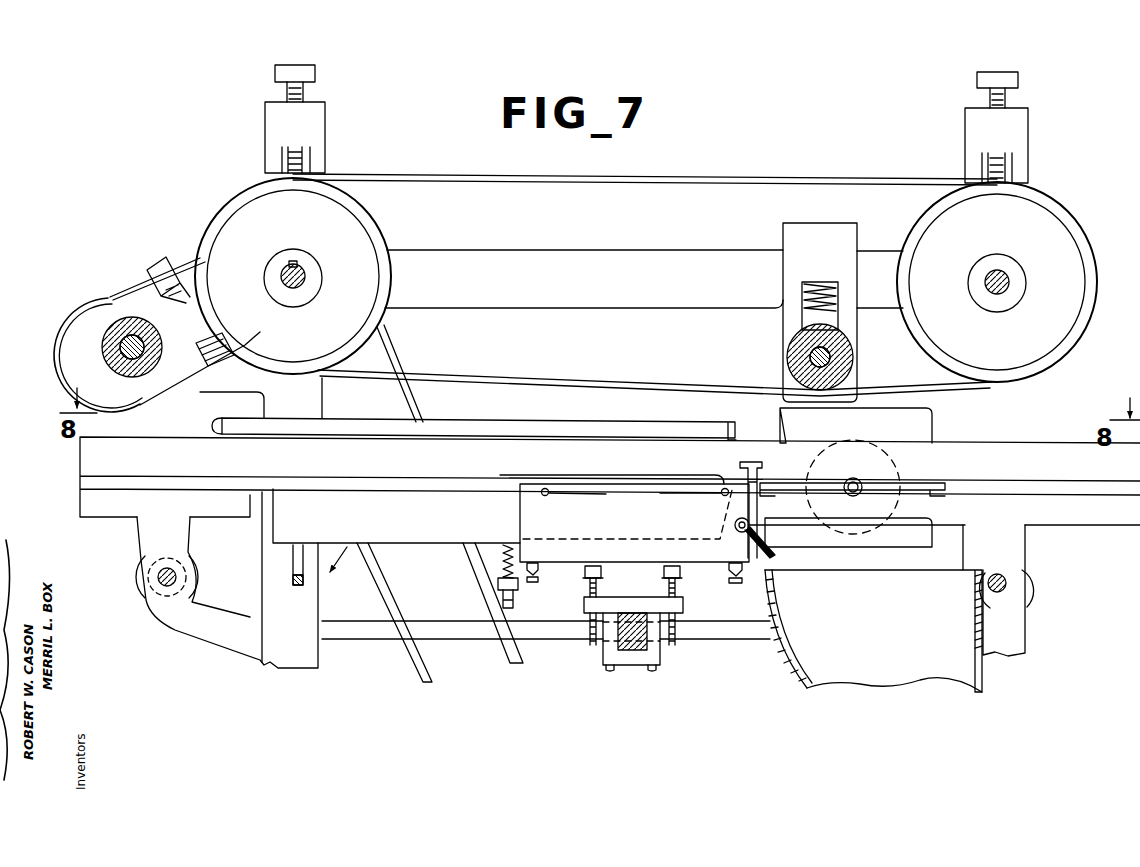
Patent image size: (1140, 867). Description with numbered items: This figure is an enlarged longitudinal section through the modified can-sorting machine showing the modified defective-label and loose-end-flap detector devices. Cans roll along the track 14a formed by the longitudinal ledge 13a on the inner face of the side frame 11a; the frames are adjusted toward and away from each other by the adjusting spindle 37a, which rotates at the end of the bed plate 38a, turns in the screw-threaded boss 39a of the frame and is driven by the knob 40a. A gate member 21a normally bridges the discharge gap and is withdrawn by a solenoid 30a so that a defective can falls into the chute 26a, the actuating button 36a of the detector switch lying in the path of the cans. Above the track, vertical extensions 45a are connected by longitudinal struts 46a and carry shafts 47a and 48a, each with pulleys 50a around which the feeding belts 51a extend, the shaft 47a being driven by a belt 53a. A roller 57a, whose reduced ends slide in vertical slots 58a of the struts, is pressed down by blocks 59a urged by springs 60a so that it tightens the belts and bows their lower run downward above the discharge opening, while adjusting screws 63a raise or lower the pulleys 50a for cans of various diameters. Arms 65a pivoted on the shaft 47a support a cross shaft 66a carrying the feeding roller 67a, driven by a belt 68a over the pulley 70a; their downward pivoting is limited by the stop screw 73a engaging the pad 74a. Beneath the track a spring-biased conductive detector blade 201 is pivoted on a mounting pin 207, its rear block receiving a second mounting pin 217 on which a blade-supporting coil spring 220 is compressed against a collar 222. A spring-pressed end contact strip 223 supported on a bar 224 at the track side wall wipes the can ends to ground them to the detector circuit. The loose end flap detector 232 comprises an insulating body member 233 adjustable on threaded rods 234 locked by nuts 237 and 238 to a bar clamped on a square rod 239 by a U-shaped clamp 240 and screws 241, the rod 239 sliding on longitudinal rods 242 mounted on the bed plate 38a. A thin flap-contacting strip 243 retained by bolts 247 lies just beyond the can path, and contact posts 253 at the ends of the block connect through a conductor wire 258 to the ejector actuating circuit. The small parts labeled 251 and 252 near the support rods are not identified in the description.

The side frame 11a is at (1112, 518).
The longitudinal ledge 13a is at (1094, 476).
The track 14a is at (1036, 462).
The gate member 21a is at (900, 482).
The chute 26a is at (888, 635).
The solenoid 30a is at (895, 512).
The actuating button 36a is at (752, 460).
The adjusting spindle 37a is at (1055, 604).
The bed plate 38a is at (1060, 630).
The boss 39a is at (1010, 560).
The knob 40a is at (1055, 578).
The vertical extension 45a is at (1042, 138).
The longitudinal strut 46a is at (640, 283).
The shaft 47a is at (303, 272).
The shaft 48a is at (1010, 276).
The pulley 50a is at (318, 340).
The feeding belt 51a is at (622, 388).
The belt 53a is at (424, 678).
The roller 57a is at (846, 362).
The vertical slot 58a is at (804, 297).
The block 59a is at (830, 320).
The spring 60a is at (830, 300).
The adjusting screw 63a is at (1042, 168).
The arm 65a is at (196, 336).
The cross shaft 66a is at (122, 347).
The feeding roller 67a is at (100, 338).
The belt 68a is at (112, 296).
The pulley 70a is at (94, 366).
The adjustable stop screw 73a is at (214, 370).
The pad 74a is at (208, 388).
The detector blade 201 is at (435, 523).
The mounting pin 207 is at (292, 567).
The second mounting pin 217 is at (502, 600).
The blade-supporting coil spring 220 is at (503, 553).
The collar 222 is at (497, 583).
The end contact strip 223 is at (562, 412).
The bar 224 is at (216, 426).
The loose end flap detector 232 is at (545, 518).
The body member 233 is at (655, 532).
The threaded rod 234 is at (598, 590).
The nut 237 is at (588, 630).
The nut 238 is at (684, 605).
The square rod 239 is at (648, 640).
The U-shaped clamp 240 is at (656, 652).
The screw 241 is at (654, 672).
The rod 242 is at (578, 636).
The flap-contacting strip 243 is at (674, 462).
The retaining bolt 247 is at (635, 493).
The nut 251 is at (538, 580).
The nut 252 is at (602, 574).
The contact post 253 is at (534, 584).
The conductor wire 258 is at (776, 556).